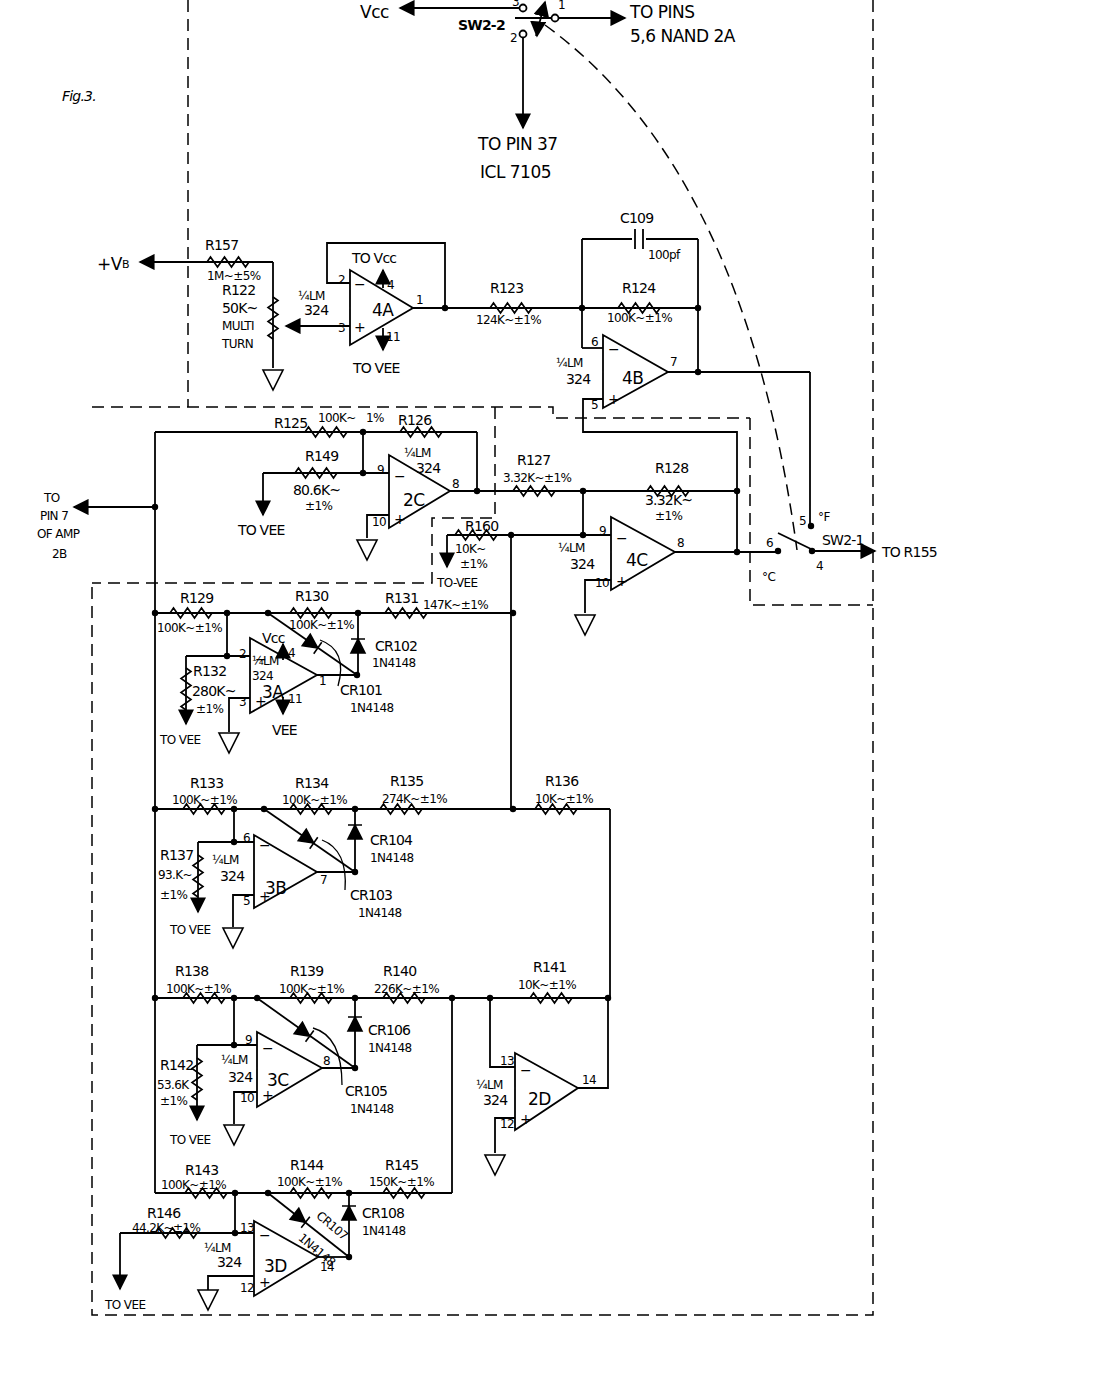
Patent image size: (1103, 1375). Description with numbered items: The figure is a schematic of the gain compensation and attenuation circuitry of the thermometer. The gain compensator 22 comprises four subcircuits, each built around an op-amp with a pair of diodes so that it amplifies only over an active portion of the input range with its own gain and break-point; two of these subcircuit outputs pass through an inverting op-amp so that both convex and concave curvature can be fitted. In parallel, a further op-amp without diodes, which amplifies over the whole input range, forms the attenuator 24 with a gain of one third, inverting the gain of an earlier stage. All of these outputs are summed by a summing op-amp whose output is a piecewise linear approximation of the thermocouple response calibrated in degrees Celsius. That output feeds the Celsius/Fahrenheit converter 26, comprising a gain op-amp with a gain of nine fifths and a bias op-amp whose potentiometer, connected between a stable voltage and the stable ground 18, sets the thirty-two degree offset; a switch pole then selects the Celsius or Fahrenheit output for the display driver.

The stable ground 18 is at (280, 380).
The gain compensator 22 is at (877, 1229).
The attenuator 24 is at (436, 407).
The Celsius/Fahrenheit converter 26 is at (877, 123).